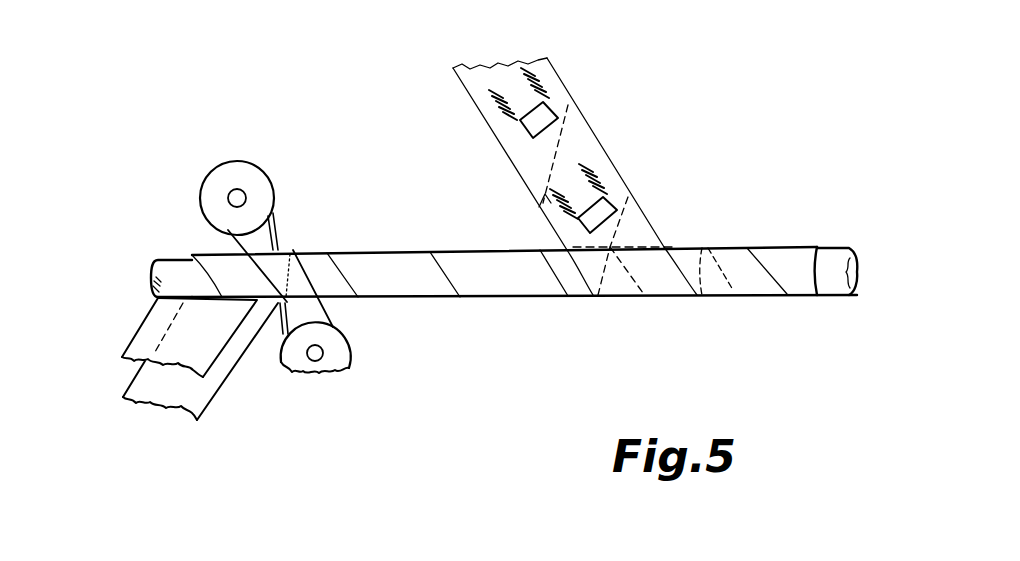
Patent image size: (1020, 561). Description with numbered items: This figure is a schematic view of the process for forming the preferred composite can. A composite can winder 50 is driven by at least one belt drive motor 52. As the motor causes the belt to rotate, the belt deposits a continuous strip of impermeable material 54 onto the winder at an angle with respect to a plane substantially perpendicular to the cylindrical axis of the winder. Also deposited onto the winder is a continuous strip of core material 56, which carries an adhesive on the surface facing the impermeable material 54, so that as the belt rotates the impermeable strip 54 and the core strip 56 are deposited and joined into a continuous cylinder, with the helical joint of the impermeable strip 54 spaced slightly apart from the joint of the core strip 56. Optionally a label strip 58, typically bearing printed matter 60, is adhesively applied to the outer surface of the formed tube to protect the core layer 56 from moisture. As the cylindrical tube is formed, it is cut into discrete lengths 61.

The composite can winder 50 is at (841, 249).
The belt drive motor 52 is at (223, 173).
The strip of impermeable material 54 is at (147, 330).
The strip of core material 56 is at (168, 396).
The label strip 58 is at (541, 78).
The printed matter 60 is at (597, 185).
The discrete lengths 61 is at (806, 247).